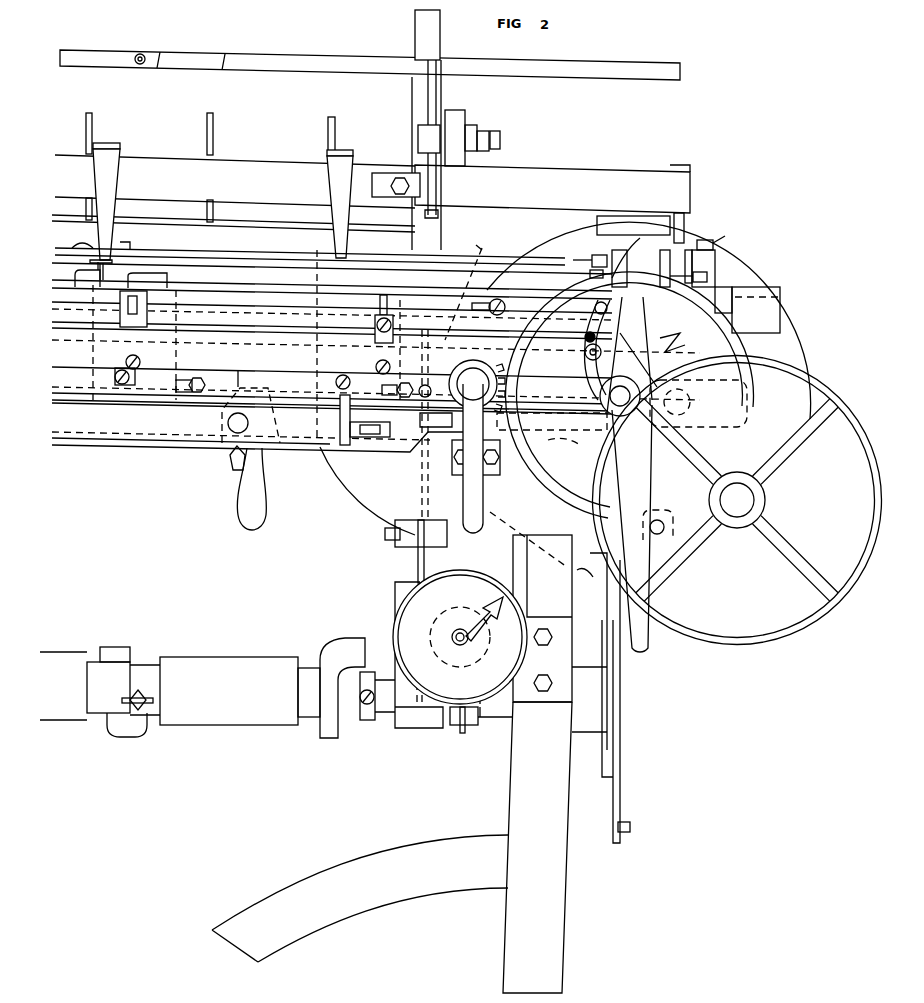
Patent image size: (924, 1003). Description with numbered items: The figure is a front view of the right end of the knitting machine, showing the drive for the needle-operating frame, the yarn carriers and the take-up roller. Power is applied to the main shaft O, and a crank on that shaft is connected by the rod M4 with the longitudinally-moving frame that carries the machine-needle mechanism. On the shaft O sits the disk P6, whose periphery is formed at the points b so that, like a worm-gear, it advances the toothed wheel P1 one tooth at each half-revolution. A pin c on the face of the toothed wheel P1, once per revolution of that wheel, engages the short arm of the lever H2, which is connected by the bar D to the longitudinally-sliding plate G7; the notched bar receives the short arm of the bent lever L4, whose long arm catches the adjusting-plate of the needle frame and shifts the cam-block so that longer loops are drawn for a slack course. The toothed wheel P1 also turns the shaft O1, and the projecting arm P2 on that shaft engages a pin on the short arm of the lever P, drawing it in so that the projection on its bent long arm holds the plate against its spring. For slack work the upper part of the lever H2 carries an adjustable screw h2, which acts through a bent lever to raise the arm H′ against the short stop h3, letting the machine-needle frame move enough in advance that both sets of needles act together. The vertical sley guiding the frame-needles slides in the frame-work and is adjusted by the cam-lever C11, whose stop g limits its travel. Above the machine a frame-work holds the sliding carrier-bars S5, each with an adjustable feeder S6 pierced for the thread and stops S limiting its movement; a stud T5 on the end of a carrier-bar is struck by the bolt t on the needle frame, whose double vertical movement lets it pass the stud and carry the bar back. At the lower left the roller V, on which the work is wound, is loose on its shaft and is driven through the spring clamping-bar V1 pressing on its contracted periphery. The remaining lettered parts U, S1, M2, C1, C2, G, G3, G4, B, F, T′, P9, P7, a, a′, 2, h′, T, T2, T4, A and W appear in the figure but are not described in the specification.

The upper rail bar U is at (370, 65).
The stops S is at (433, 130).
The adjusting knob S1 is at (436, 153).
The carrier-bars S5 is at (371, 195).
The adjustable feeder S6 is at (212, 196).
The stud T5 is at (688, 227).
The upper frame rail M2 is at (310, 264).
The frame rail C1 is at (332, 280).
The frame rail C2 is at (332, 315).
The guide bar G is at (376, 342).
The pin c is at (634, 826).
The screw clamp G3 is at (138, 370).
The bolt and pivot G4 is at (228, 405).
The longitudinally-sliding plate G7 is at (376, 413).
The base plate B is at (261, 483).
The bar D is at (370, 319).
The bracket F is at (383, 402).
The stop g is at (230, 466).
The cam-lever C11 is at (252, 489).
The set screw T′ is at (488, 313).
The bent lever L4 is at (470, 286).
The lever P is at (416, 441).
The pawl arm P9 is at (462, 446).
The disk P6 is at (649, 320).
The formed points of periphery b is at (565, 410).
The curved band P7 is at (629, 395).
The dashed cam path a is at (564, 451).
The plate a′ is at (552, 425).
The main shaft O is at (620, 396).
The roller 2 is at (597, 350).
The short stop h3 is at (615, 329).
The nut h′ is at (649, 280).
The arm H′ is at (661, 268).
The block T is at (703, 263).
The bolt t is at (721, 239).
The block T2 is at (726, 301).
The block T4 is at (756, 310).
The adjustable screw h2 is at (672, 349).
The rod M4 is at (737, 500).
The lever H2 is at (632, 530).
The main frame column A is at (409, 764).
The toothed wheel P1 is at (622, 701).
The projecting arm P2 is at (432, 655).
The dial wheel W is at (460, 660).
The shaft O1 is at (495, 718).
The rollers V is at (180, 692).
The spring clamping-bar V1 is at (357, 688).